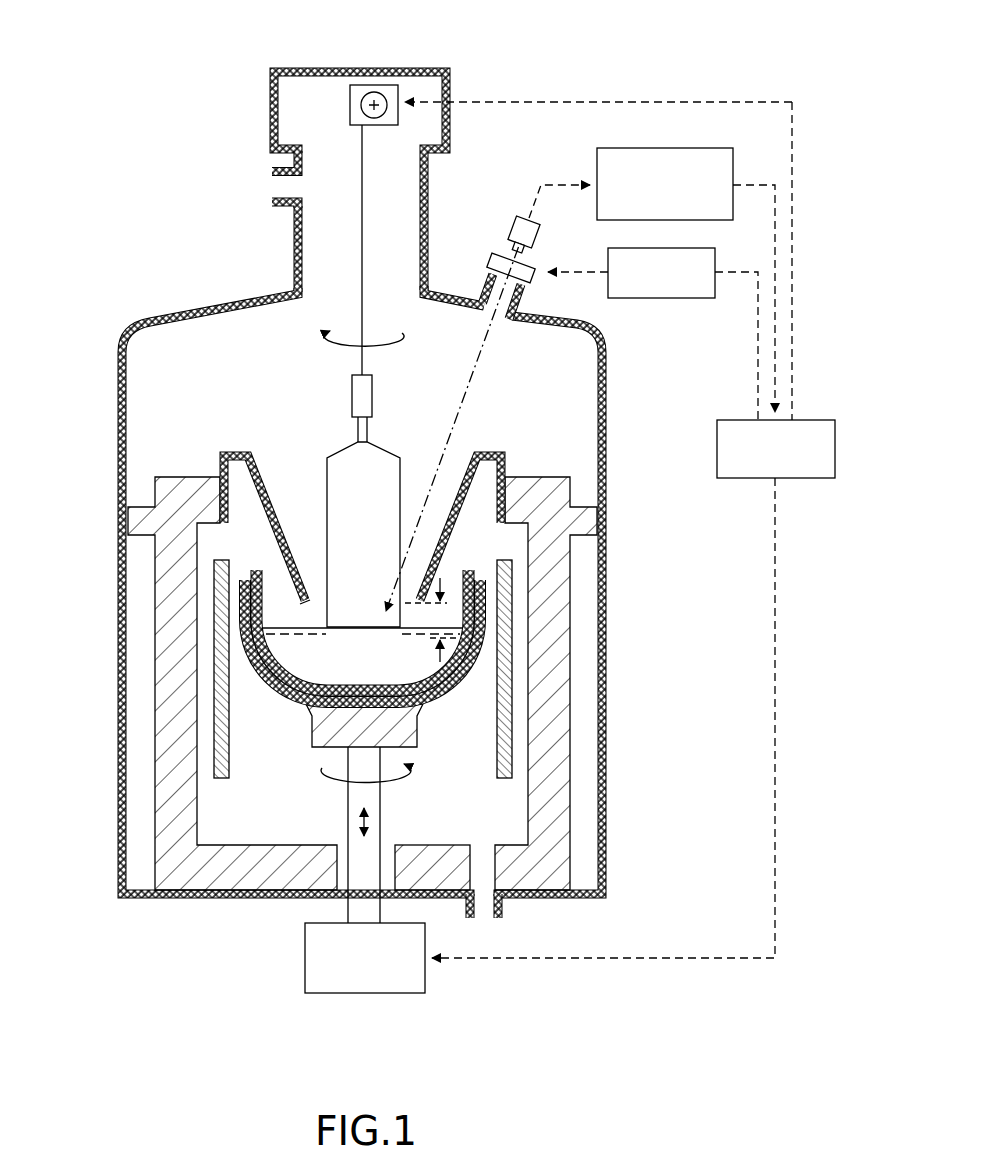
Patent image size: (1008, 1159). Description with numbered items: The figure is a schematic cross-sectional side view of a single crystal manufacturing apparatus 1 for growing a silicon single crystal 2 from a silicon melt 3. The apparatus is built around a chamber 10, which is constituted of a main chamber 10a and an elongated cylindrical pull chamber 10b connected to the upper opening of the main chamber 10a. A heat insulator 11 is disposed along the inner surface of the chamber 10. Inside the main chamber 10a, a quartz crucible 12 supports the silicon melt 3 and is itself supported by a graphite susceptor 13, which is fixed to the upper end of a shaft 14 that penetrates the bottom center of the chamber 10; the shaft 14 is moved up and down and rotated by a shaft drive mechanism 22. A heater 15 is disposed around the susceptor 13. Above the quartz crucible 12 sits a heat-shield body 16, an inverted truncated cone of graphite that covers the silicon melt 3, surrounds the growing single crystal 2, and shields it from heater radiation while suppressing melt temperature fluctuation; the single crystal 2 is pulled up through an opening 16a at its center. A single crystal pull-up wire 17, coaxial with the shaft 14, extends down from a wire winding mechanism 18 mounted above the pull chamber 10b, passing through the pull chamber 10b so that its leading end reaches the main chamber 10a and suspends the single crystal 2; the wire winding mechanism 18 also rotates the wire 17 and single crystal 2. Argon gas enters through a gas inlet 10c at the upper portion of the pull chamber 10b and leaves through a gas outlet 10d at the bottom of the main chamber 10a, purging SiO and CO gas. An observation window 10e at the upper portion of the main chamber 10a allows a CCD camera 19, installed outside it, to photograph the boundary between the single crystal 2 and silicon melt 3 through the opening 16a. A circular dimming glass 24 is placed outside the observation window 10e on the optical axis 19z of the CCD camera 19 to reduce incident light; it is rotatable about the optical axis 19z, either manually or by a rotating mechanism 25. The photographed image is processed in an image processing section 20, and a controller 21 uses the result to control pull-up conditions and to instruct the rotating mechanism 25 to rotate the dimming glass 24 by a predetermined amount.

The single crystal manufacturing apparatus 1 is at (470, 25).
The single crystal 2 is at (355, 556).
The silicon melt 3 is at (355, 673).
The chamber 10 is at (324, 512).
The main chamber 10a is at (118, 576).
The pull chamber 10b is at (294, 251).
The gas inlet 10c is at (281, 187).
The gas outlet 10d is at (486, 904).
The observation window 10e is at (531, 290).
The heat insulator 11 is at (563, 816).
The quartz crucible 12 is at (469, 571).
The graphite susceptor 13 is at (484, 579).
The shaft 14 is at (348, 806).
The heater 15 is at (215, 690).
The heat-shield body 16 is at (276, 541).
The opening 16a is at (318, 596).
The wire 17 is at (366, 258).
The wire winding mechanism 18 is at (350, 104).
The CCD camera 19 is at (540, 236).
The optical axis 19z is at (484, 375).
The image processing section 20 is at (682, 148).
The controller 21 is at (818, 420).
The shaft drive mechanism 22 is at (305, 958).
The dimming glass 24 is at (497, 258).
The rotating mechanism 25 is at (696, 299).